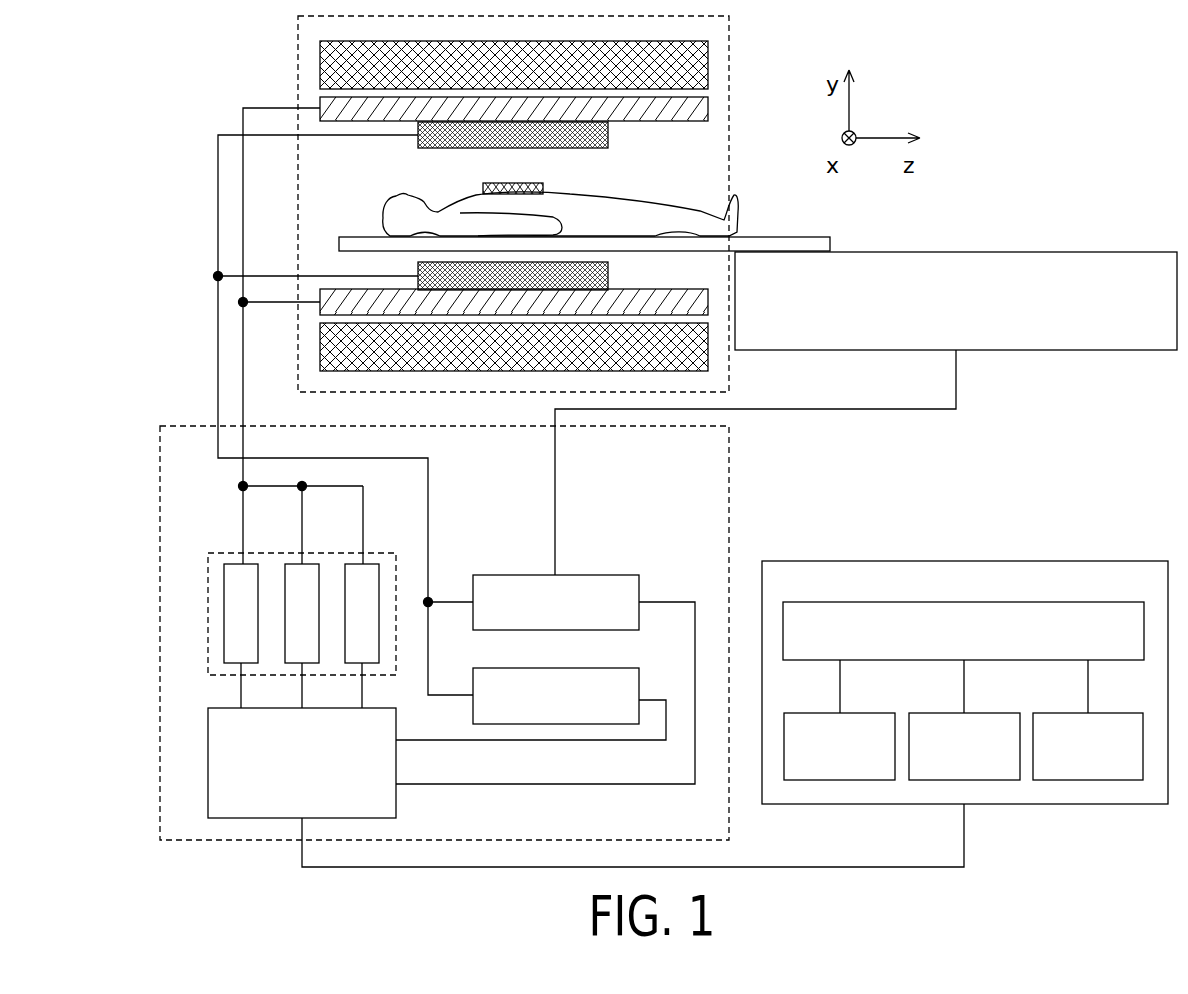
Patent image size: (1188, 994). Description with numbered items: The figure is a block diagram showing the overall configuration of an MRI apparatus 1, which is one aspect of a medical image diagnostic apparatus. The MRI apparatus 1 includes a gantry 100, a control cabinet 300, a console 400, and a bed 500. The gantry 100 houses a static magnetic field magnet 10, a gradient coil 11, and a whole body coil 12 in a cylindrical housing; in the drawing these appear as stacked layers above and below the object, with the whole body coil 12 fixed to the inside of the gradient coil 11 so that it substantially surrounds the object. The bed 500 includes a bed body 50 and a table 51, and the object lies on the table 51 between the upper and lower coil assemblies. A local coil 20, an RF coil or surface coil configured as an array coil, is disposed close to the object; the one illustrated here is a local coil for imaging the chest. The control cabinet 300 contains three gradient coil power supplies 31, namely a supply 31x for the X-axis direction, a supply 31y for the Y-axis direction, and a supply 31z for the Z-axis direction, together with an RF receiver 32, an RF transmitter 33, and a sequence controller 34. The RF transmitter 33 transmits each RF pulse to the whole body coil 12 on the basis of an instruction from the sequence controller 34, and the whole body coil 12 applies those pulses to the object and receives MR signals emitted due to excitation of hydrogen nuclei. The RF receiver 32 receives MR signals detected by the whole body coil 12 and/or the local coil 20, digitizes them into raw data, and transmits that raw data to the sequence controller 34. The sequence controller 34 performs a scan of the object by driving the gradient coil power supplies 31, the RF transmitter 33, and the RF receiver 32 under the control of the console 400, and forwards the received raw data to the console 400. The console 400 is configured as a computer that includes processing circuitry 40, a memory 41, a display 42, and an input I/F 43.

The MRI apparatus 1 is at (1003, 112).
The gantry 100 is at (733, 53).
The static magnetic field magnet 10 is at (708, 76).
The gradient coil 11 is at (708, 106).
The whole body coil 12 is at (608, 134).
The local coil 20 is at (499, 183).
The table 51 is at (772, 236).
The bed 500 is at (1013, 250).
The bed body 50 is at (1076, 251).
The control cabinet 300 is at (733, 468).
The gradient coil power supplies 31 is at (304, 578).
The gradient coil power supply in X-axis direction 31x is at (245, 563).
The gradient coil power supply in Y-axis direction 31y is at (305, 563).
The gradient coil power supply in Z-axis direction 31z is at (365, 563).
The RF receiver 32 is at (580, 575).
The RF transmitter 33 is at (580, 668).
The sequence controller 34 is at (228, 708).
The console 400 is at (1023, 560).
The processing circuitry 40 is at (1072, 602).
The memory 41 is at (1098, 713).
The display 42 is at (975, 713).
The input I/F 43 is at (852, 713).